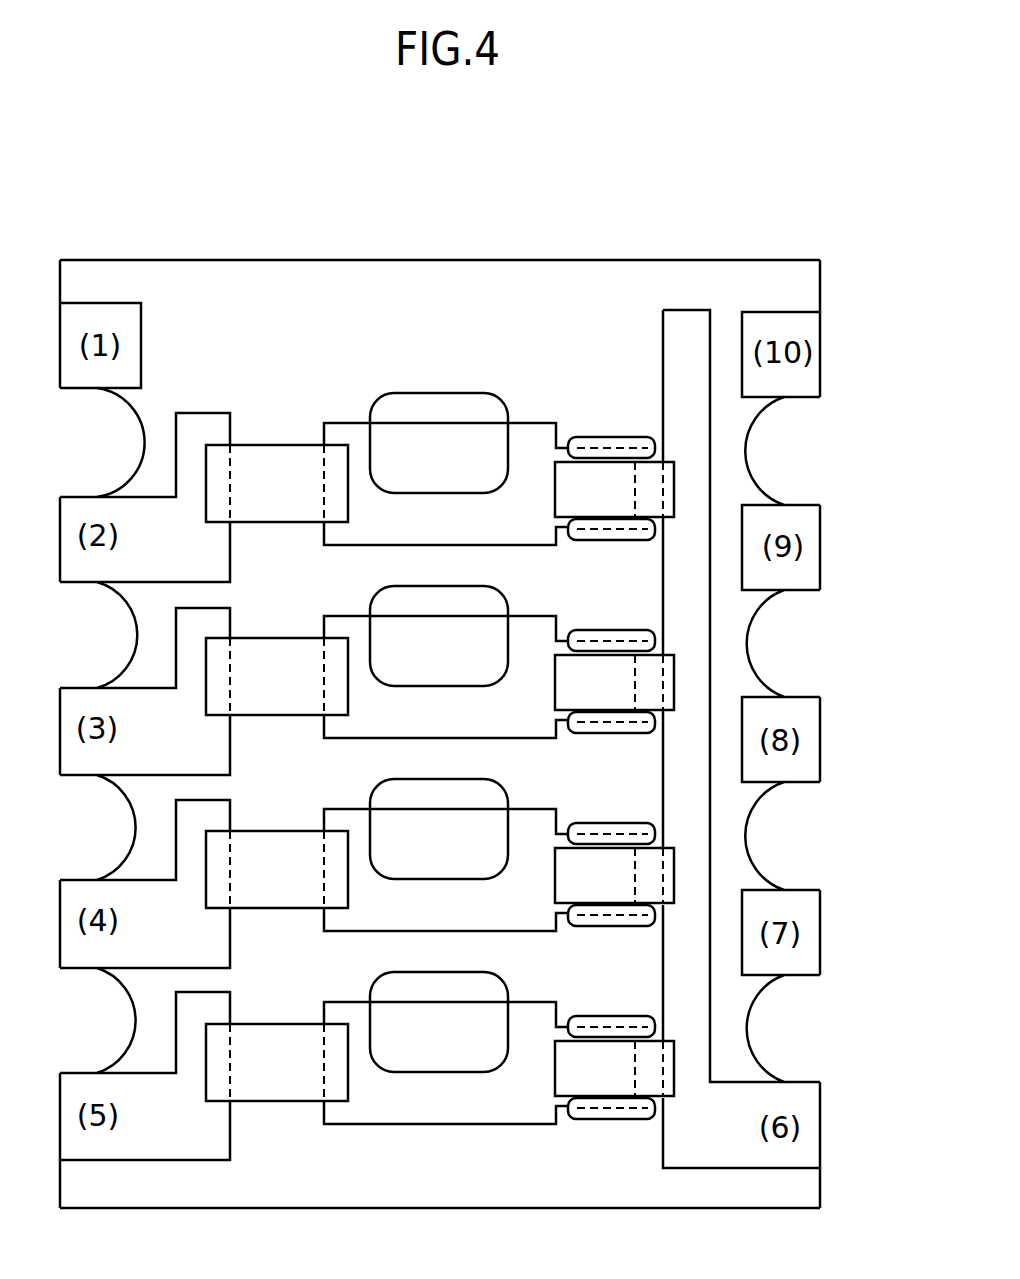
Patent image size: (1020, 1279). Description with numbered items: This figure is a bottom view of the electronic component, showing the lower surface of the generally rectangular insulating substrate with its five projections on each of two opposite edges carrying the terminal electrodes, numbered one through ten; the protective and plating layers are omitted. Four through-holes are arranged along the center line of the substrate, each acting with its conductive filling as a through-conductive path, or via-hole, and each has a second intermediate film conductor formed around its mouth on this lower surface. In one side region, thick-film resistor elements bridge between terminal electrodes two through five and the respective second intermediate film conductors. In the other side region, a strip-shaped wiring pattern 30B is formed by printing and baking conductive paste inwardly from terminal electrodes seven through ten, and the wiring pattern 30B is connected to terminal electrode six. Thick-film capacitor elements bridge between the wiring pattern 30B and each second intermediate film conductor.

The wiring pattern 30B is at (688, 614).